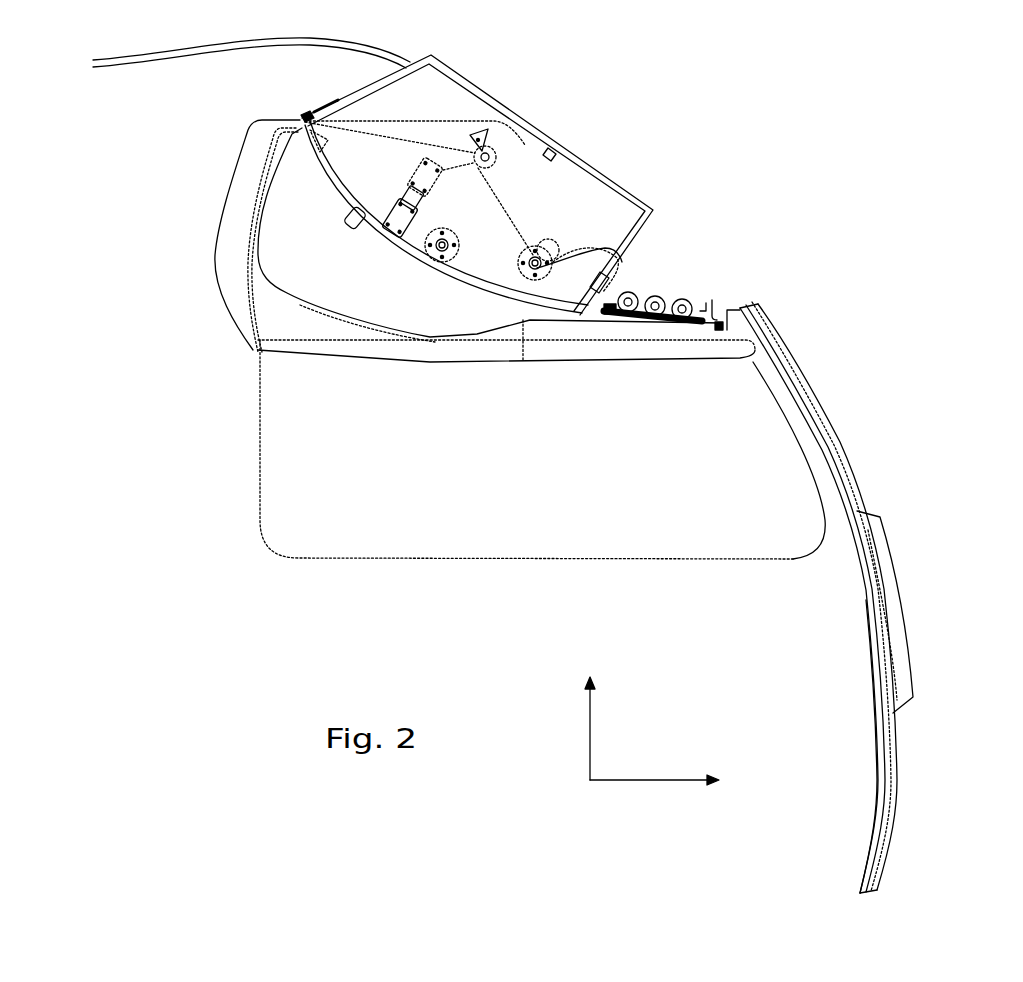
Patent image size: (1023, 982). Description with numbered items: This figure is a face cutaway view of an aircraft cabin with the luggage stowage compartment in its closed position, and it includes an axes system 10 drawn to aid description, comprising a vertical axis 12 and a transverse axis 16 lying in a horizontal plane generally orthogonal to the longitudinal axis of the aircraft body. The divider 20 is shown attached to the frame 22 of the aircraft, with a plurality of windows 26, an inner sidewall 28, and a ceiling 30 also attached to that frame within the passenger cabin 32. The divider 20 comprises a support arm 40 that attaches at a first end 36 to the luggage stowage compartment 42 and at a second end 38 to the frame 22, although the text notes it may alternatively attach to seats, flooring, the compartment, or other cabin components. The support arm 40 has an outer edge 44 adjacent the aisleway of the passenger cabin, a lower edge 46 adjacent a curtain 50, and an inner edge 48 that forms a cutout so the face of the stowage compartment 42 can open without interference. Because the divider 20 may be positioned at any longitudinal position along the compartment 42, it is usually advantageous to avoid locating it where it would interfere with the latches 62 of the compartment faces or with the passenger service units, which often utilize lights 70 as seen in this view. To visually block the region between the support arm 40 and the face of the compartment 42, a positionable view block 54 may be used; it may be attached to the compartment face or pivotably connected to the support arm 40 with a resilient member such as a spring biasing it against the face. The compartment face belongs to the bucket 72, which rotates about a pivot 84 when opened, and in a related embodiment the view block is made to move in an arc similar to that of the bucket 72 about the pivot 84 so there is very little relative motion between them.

The axes system 10 is at (633, 753).
The vertical axis 12 is at (589, 728).
The transverse axis 16 is at (647, 783).
The divider 20 is at (216, 451).
The frame 22 is at (846, 492).
The windows 26 is at (913, 666).
The inner sidewall 28 is at (870, 680).
The ceiling 30 is at (353, 44).
The passenger cabin 32 is at (582, 662).
The first end 36 is at (306, 118).
The second end 38 is at (740, 310).
The support arm 40 is at (215, 285).
The luggage stowage compartment 42 is at (623, 187).
The outer edge 44 is at (237, 333).
The lower edge 46 is at (421, 362).
The inner edge 48 is at (250, 210).
The curtain 50 is at (490, 557).
The view block 54 is at (474, 233).
The latches 62 is at (387, 267).
The lights 70 is at (657, 295).
The bucket 72 is at (477, 233).
The pivot 84 is at (603, 277).